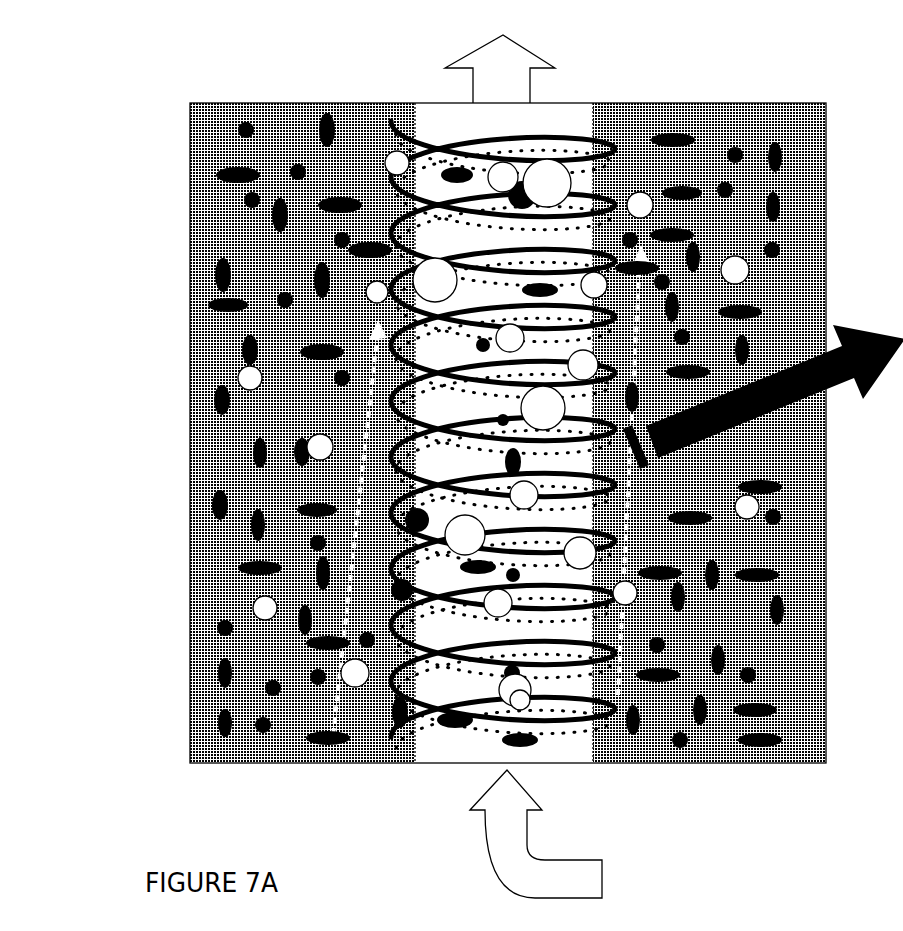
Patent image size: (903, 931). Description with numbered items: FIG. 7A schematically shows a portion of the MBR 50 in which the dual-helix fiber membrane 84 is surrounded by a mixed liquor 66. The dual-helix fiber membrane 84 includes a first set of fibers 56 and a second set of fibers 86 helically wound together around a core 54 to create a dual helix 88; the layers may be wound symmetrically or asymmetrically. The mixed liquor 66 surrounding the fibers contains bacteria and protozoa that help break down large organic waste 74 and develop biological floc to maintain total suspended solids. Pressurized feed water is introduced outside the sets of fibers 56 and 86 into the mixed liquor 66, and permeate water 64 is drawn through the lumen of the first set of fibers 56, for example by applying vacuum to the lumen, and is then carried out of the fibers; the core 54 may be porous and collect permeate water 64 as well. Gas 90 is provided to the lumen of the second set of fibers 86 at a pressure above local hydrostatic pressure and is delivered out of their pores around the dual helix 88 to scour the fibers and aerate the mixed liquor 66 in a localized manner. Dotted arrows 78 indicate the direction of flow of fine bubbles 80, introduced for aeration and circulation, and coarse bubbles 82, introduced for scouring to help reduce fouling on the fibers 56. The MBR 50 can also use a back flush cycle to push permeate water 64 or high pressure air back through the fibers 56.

The MBR 50 is at (806, 117).
The core 54 is at (438, 120).
The first set of fibers 56 is at (423, 727).
The permeate water 64 is at (512, 89).
The mixed liquor 66 is at (220, 472).
The large organic waste 74 is at (245, 130).
The dotted arrows 78 is at (328, 745).
The fine bubbles 80 is at (322, 447).
The coarse bubbles 82 is at (457, 532).
The dual-helix fiber membrane 84 is at (560, 762).
The second set of fibers 86 is at (587, 742).
The dual helix 88 is at (553, 140).
The gas 90 is at (577, 891).